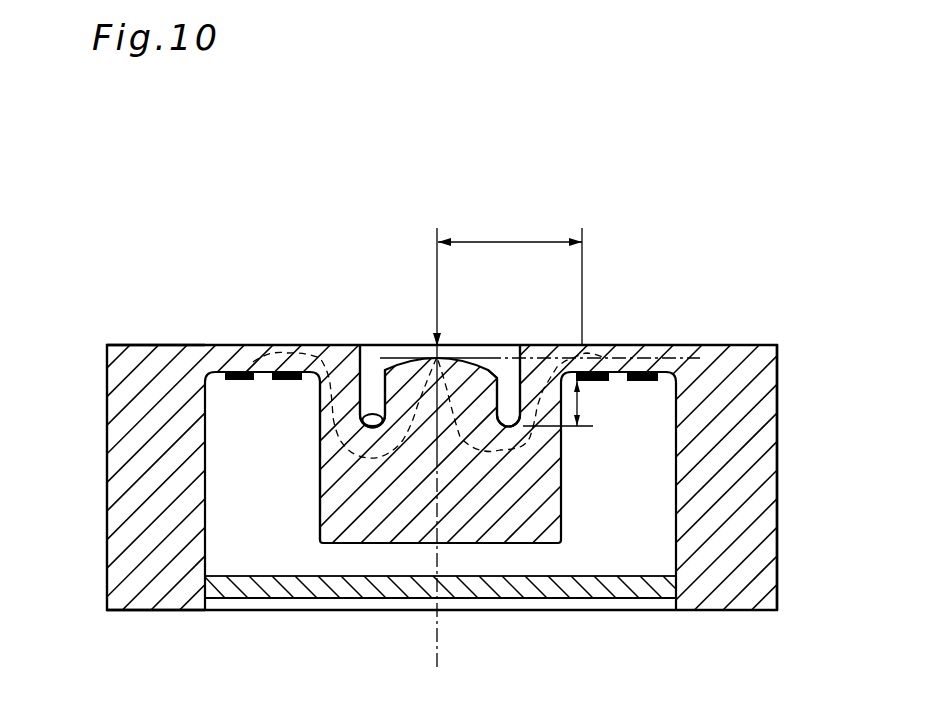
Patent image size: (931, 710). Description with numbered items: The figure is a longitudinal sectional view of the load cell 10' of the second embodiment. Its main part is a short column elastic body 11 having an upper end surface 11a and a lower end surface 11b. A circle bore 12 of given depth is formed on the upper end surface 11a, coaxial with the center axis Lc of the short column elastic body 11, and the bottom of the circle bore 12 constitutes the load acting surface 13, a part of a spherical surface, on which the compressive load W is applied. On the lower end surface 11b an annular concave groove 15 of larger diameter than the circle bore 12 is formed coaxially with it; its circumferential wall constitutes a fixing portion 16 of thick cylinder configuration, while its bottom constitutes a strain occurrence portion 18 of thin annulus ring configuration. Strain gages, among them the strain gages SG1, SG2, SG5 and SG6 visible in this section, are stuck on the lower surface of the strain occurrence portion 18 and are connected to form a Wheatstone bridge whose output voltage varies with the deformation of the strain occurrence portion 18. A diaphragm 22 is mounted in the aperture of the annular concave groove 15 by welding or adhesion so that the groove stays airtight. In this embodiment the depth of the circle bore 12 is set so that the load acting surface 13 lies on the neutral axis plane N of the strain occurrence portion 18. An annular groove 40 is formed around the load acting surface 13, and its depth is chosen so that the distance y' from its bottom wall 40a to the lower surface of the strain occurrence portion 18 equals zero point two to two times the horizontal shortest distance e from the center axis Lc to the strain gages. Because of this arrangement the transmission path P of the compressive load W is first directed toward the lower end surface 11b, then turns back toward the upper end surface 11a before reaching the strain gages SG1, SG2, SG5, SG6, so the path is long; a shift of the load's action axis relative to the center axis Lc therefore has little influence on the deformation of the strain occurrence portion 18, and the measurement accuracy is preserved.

The load cell 10' is at (757, 186).
The short column elastic body 11 is at (107, 352).
The upper end surface 11a is at (145, 345).
The lower end surface 11b is at (156, 611).
The circle bore 12 is at (363, 343).
The load acting surface 13 is at (488, 368).
The annular concave groove 15 is at (208, 578).
The fixing portion 16 is at (742, 515).
The strain occurrence portion 18 is at (245, 371).
The diaphragm 22 is at (672, 600).
The annular groove 40 is at (372, 395).
The bottom wall 40a is at (328, 432).
The strain gage SG1 is at (593, 372).
The strain gage SG2 is at (637, 383).
The strain gage SG5 is at (296, 372).
The strain gage SG6 is at (210, 388).
The compressive load W is at (437, 308).
The neutral axis plane N is at (680, 358).
The transmission path P is at (520, 447).
The horizontal shortest distance e is at (510, 277).
The distance y' is at (566, 403).
The center axis Lc is at (437, 648).